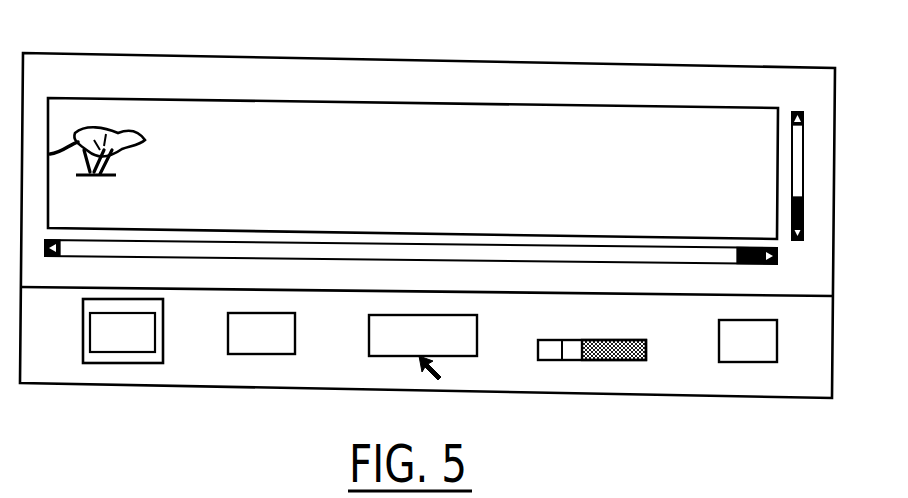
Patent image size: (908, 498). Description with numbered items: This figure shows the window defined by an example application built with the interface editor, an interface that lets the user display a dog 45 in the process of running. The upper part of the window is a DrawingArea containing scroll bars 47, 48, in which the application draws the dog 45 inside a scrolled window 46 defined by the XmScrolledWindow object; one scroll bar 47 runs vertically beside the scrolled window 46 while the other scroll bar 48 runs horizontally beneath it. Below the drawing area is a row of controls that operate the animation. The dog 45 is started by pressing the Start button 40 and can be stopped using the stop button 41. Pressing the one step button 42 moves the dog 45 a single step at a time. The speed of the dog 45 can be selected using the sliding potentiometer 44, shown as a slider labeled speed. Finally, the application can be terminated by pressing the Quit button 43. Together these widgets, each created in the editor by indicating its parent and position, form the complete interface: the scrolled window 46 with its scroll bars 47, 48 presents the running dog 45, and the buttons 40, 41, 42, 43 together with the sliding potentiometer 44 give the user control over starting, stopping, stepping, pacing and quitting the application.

The Start button 40 is at (117, 349).
The stop button 41 is at (260, 353).
The one step button 42 is at (428, 370).
The Quit button 43 is at (772, 341).
The sliding potentiometer 44 is at (607, 361).
The dog 45 is at (103, 130).
The scrolled window 46 is at (733, 108).
The scroll bar 47 is at (803, 165).
The scroll bar 48 is at (725, 263).